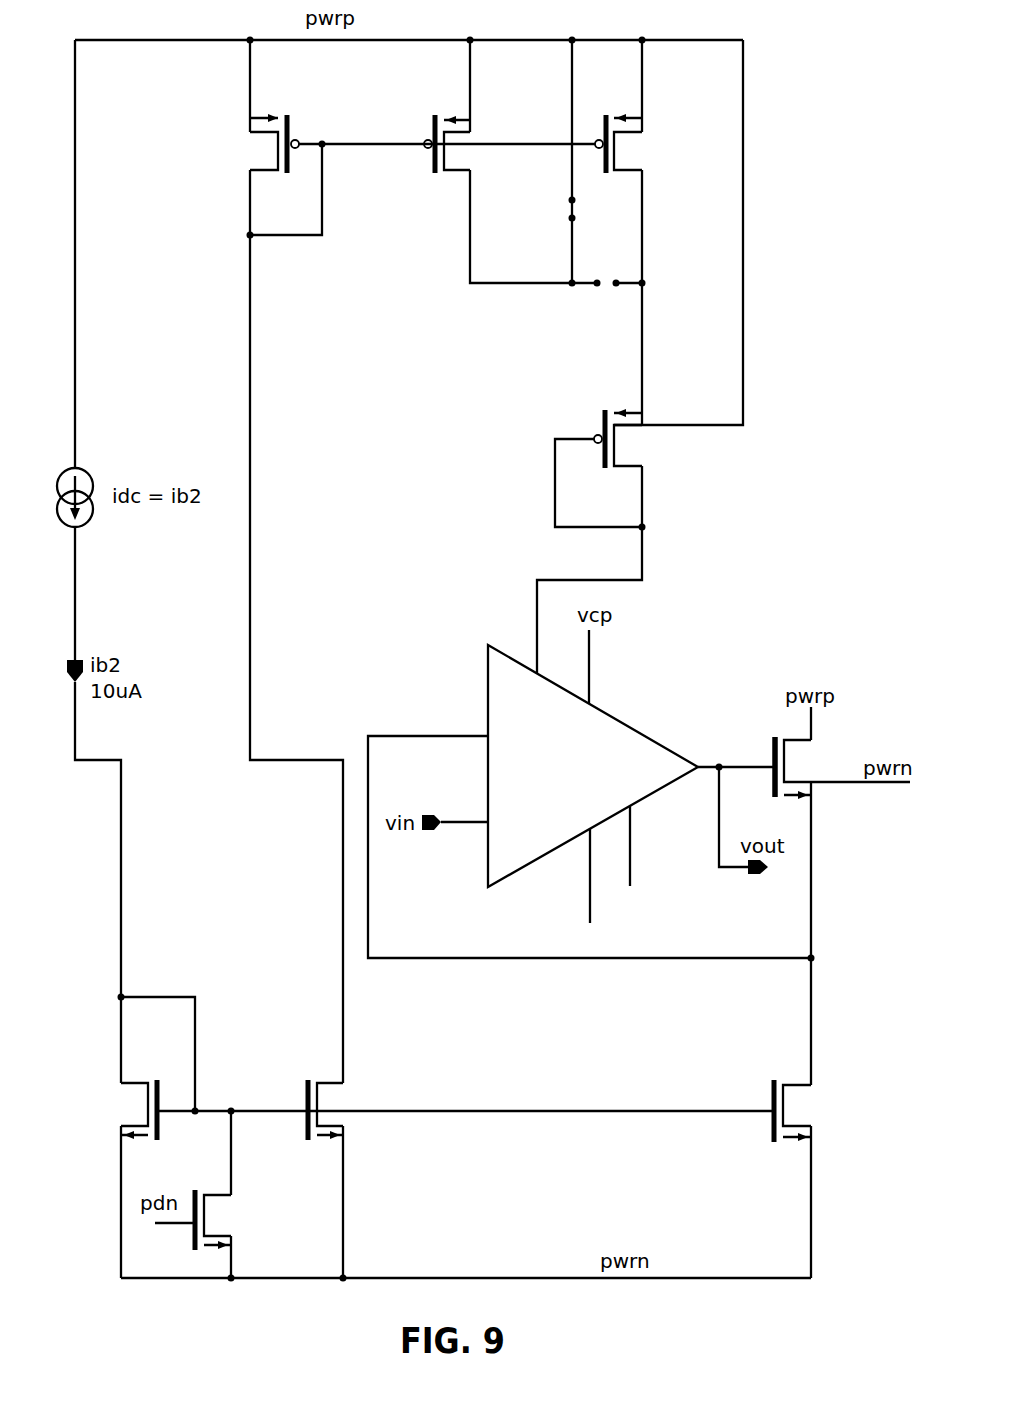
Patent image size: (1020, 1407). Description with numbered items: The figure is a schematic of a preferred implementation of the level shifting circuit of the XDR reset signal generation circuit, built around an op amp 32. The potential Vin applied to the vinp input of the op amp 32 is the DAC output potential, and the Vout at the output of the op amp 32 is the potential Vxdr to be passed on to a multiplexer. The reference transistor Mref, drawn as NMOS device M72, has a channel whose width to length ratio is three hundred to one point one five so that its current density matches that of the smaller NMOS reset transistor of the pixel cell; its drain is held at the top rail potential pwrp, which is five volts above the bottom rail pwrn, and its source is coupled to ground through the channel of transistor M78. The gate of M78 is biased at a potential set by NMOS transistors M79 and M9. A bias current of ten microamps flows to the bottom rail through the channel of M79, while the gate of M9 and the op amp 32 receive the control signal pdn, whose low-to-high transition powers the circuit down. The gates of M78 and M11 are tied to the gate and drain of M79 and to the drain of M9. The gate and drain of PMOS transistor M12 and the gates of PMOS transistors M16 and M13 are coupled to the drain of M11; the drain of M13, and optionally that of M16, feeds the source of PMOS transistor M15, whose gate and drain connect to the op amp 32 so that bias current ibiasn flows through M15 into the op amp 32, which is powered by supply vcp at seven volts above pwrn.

The op amp 32 is at (488, 670).
The PMOS transistor M12 is at (232, 156).
The PMOS transistor M16 is at (491, 159).
The PMOS transistor M13 is at (660, 154).
The PMOS transistor M15 is at (660, 486).
The NMOS transistor M72 is at (842, 827).
The reference transistor Mref is at (766, 733).
The NMOS transistor M78 is at (838, 1137).
The NMOS transistor M79 is at (91, 1120).
The NMOS transistor M9 is at (258, 1205).
The NMOS transistor M11 is at (372, 1130).